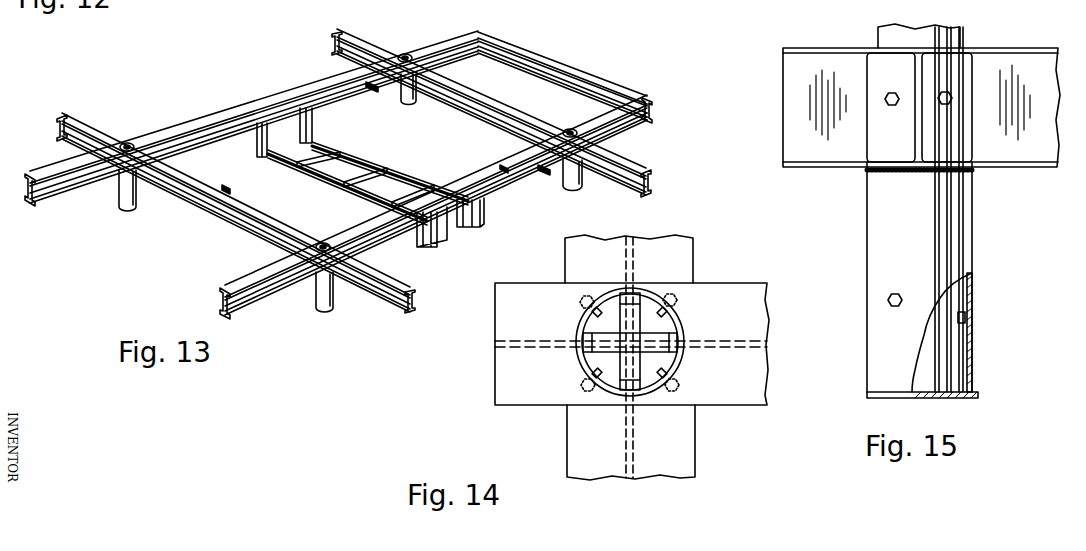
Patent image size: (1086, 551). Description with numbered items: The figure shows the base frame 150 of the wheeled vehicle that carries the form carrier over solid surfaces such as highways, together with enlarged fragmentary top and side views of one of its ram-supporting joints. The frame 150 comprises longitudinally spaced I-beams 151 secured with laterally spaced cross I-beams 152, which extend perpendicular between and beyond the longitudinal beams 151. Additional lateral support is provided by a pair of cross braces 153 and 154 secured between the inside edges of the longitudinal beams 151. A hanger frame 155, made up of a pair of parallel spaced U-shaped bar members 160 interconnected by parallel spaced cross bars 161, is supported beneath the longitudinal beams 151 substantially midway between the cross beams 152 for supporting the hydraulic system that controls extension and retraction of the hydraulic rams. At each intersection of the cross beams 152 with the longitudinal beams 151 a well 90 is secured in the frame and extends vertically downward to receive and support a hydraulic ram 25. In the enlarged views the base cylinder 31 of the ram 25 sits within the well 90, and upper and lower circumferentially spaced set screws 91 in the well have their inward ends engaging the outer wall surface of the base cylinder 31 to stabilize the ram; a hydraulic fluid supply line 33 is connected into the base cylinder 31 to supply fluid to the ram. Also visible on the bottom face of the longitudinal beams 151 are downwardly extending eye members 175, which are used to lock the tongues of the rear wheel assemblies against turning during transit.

In FIG. 13, the frame 150 is at (199, 108).
In FIG. 13, the longitudinal I-beams 151 is at (56, 169).
In FIG. 14, the longitudinal I-beams 151 is at (495, 404).
In FIG. 15, the longitudinal I-beams 151 is at (812, 156).
In FIG. 13, the cross I-beams 152 is at (66, 112).
In FIG. 14, the cross I-beams 152 is at (567, 453).
In FIG. 15, the cross I-beams 152 is at (918, 73).
In FIG. 13, the cross brace 153 is at (406, 130).
In FIG. 13, the cross brace 154 is at (556, 80).
In FIG. 13, the hanger frame 155 is at (331, 197).
In FIG. 13, the U-shaped bar members 160 is at (282, 163).
In FIG. 13, the cross bars 161 is at (306, 135).
In FIG. 13, the eye member 175 is at (366, 80).
In FIG. 13, the well 90 is at (121, 200).
In FIG. 14, the well 90 is at (682, 360).
In FIG. 15, the well 90 is at (973, 233).
In FIG. 14, the set screws 91 is at (580, 303).
In FIG. 15, the set screws 91 is at (896, 106).
In FIG. 14, the hydraulic ram 25 is at (686, 323).
In FIG. 15, the hydraulic ram 25 is at (871, 36).
In FIG. 15, the base cylinder 31 is at (952, 363).
In FIG. 15, the hydraulic fluid supply line 33 is at (968, 318).